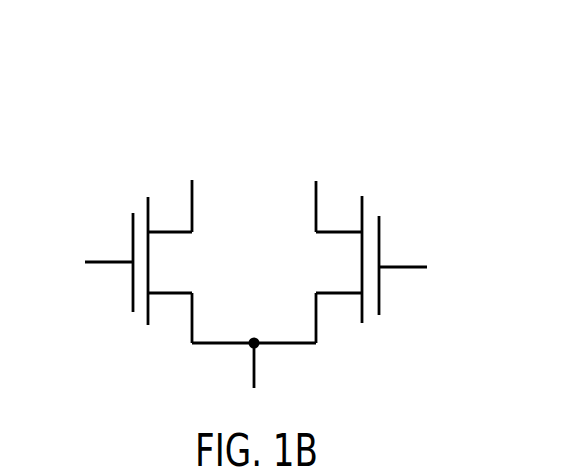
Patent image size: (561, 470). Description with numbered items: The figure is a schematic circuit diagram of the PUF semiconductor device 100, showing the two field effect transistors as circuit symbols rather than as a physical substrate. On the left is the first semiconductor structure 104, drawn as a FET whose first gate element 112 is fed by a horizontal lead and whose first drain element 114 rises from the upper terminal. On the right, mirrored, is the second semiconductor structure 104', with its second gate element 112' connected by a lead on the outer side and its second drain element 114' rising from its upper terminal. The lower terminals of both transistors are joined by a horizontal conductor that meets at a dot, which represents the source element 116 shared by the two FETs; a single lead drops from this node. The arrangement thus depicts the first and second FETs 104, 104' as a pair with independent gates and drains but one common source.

The PUF semiconductor device 100 is at (168, 108).
The first semiconductor structure 104 is at (156, 232).
The second semiconductor structure 104' is at (355, 235).
The first gate element 112 is at (109, 290).
The second gate element 112' is at (403, 296).
The first drain element 114 is at (209, 190).
The second drain element 114' is at (299, 190).
The source element 116 is at (253, 366).